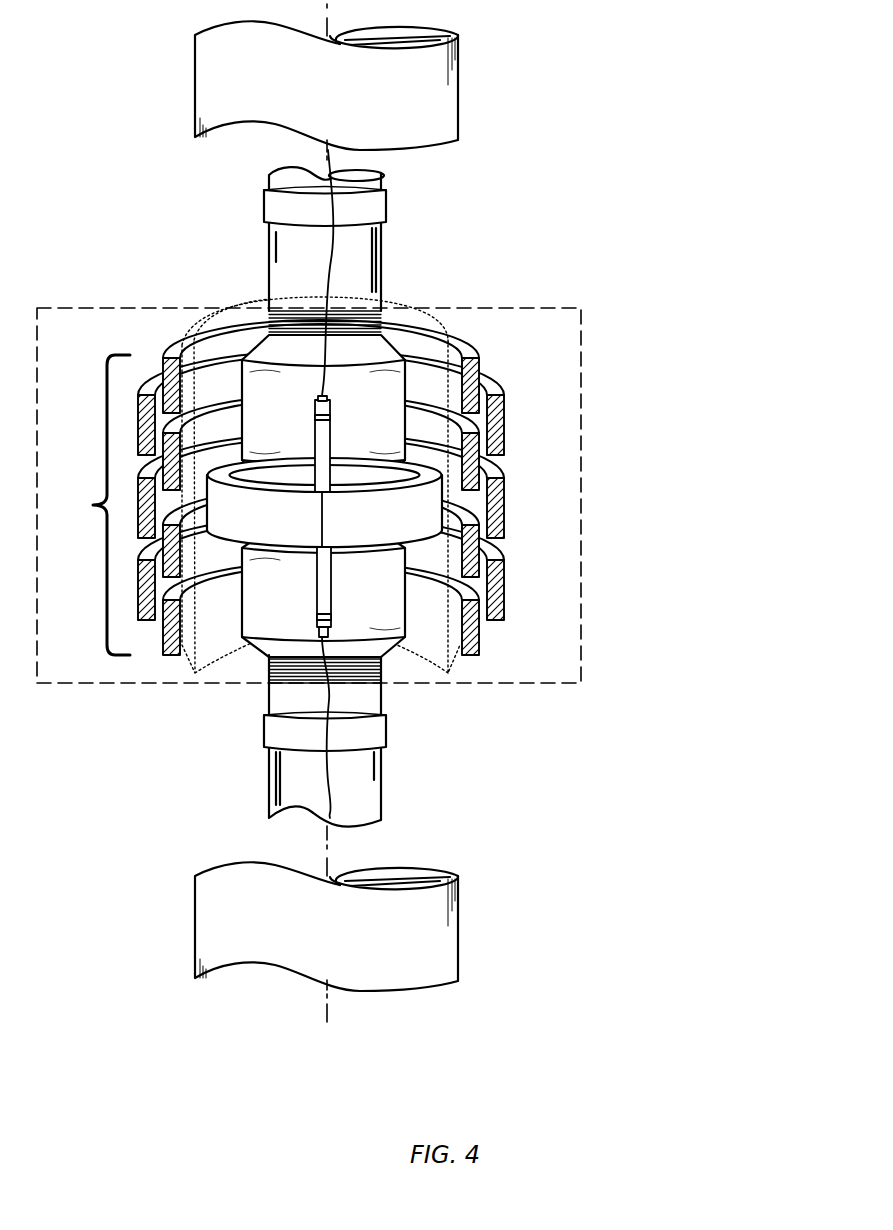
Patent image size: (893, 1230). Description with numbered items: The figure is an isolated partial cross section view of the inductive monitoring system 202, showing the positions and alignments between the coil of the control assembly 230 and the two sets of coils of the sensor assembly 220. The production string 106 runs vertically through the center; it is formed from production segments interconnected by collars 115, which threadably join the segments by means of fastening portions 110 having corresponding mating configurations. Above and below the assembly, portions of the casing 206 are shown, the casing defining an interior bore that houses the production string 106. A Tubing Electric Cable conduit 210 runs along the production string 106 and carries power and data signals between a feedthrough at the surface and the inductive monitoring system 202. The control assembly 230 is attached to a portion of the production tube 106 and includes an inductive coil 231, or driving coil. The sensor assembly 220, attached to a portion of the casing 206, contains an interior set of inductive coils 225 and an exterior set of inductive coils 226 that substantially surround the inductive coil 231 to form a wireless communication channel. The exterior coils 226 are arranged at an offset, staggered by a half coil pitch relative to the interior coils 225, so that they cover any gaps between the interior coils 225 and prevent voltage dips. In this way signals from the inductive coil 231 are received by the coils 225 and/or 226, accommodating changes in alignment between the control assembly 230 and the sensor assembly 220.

The production string 106 is at (286, 260).
The fastening portions 110 is at (362, 325).
The collars 115 is at (287, 203).
The inductive monitoring system 202 is at (565, 335).
The casing 206 is at (208, 78).
The Tubing Electric Cable conduit 210 is at (337, 233).
The sensor assembly 220 is at (89, 505).
The interior set of inductive coils 225 is at (480, 457).
The exterior set of inductive coils 226 is at (492, 425).
The control assembly 230 is at (481, 390).
The inductive coil 231 is at (343, 513).